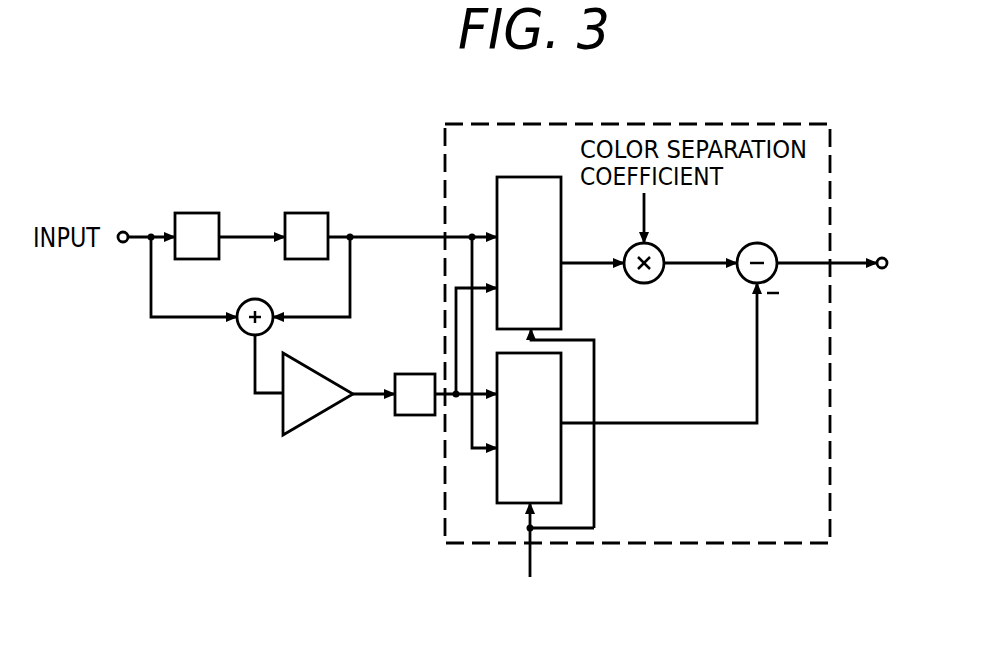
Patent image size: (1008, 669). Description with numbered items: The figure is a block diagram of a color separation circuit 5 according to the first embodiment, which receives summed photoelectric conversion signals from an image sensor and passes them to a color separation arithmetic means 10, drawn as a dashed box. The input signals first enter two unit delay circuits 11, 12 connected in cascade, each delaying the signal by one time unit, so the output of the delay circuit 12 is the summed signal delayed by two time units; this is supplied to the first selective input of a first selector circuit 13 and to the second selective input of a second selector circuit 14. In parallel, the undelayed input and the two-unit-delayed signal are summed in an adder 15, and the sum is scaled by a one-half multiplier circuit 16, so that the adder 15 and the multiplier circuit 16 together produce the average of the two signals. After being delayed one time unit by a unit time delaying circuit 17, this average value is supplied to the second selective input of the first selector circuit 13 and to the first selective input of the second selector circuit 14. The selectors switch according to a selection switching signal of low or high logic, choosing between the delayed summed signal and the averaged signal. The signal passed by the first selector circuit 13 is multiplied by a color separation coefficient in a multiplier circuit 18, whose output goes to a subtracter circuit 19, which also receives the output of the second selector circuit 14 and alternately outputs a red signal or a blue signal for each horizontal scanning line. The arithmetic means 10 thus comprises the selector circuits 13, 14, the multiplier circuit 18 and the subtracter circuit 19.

The color separation circuit 5 is at (327, 131).
The color separation arithmetic means 10 is at (831, 517).
The unit delay circuit 11 is at (211, 213).
The unit delay circuit 12 is at (318, 213).
The first selector circuit 13 is at (561, 311).
The second selector circuit 14 is at (497, 487).
The adder 15 is at (243, 331).
The 1/2 multiplier circuit 16 is at (318, 418).
The unit time delaying circuit 17 is at (405, 416).
The multiplier circuit 18 is at (655, 282).
The subtracter circuit 19 is at (766, 245).